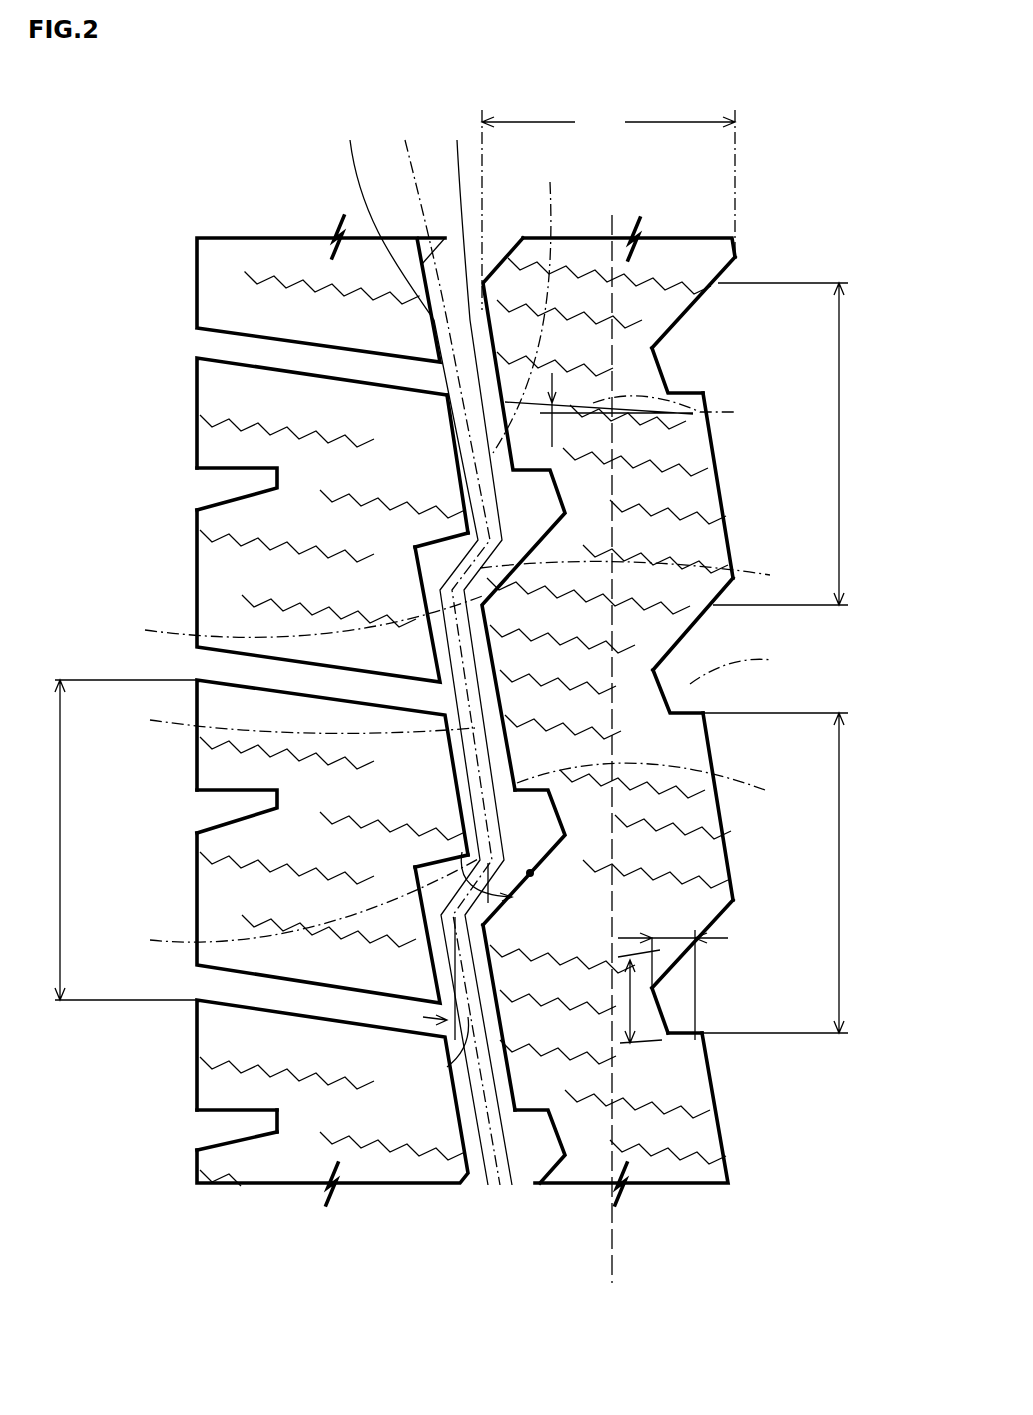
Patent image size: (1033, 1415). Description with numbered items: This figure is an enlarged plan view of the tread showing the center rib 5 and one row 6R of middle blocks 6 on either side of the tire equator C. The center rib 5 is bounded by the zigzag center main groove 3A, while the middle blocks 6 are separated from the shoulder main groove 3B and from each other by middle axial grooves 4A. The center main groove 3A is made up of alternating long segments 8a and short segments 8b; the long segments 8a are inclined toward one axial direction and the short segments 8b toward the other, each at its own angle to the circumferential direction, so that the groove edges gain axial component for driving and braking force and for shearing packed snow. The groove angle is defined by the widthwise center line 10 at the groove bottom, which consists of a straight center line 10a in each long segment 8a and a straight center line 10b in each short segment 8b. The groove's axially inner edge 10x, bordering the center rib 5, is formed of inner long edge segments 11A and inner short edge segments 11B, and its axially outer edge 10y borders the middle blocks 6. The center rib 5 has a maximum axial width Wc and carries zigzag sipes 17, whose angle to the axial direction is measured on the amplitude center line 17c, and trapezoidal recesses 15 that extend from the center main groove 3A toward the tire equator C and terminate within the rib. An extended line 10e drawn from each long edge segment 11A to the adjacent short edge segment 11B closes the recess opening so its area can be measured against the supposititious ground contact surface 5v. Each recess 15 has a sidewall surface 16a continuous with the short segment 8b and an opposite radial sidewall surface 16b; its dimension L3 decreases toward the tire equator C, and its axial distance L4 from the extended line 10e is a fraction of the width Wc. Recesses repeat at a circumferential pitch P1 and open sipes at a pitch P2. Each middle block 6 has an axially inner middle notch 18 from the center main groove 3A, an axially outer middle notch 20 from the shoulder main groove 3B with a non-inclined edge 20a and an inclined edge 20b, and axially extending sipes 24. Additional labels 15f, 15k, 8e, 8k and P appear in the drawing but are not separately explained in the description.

The middle block 6 is at (179, 375).
The row of middle blocks 6R is at (232, 222).
The middle axial groove 4A is at (284, 342).
The widthwise center line 10 is at (442, 648).
The axially outer edge 10y is at (405, 648).
The axially inner edge 10x is at (468, 648).
The extended line 10e is at (660, 481).
The widthwise center line of long segment 10a is at (282, 716).
The widthwise center line of short segment 10b is at (455, 753).
The maximum axial width of center rib Wc is at (608, 210).
The center rib 5 is at (758, 231).
The supposititious ground contact surface 5v is at (682, 1167).
The center main groove 3A is at (785, 1130).
The shoulder main groove 3B is at (172, 275).
The sipe 17 is at (645, 278).
The amplitude center line 17c is at (645, 411).
The recess 15 is at (672, 370).
The lug groove portion 15f is at (660, 690).
The lug groove portion 15k is at (660, 997).
The inner long edge segment 11A is at (715, 472).
The inner short edge segment 11B is at (713, 607).
The sidewall surface 16a is at (658, 972).
The sidewall surface 16b is at (703, 1033).
The long segment 8a is at (450, 436).
The short segment 8b is at (437, 567).
The groove edge line 8e is at (287, 621).
The groove bend point 8k is at (530, 873).
The axially inner middle notch 18 is at (250, 500).
The axially outer middle notch 20 is at (208, 799).
The non-inclined edge 20a is at (222, 1111).
The inclined edge 20b is at (222, 1147).
The axially extending sipe 24 is at (390, 1140).
The tire equator C is at (611, 767).
The pitch P is at (123, 840).
The circumferential pitch of recesses P1 is at (779, 873).
The circumferential pitch of open sipes P2 is at (783, 444).
The dimension of recess L3 is at (639, 996).
The axial distance L4 is at (668, 938).